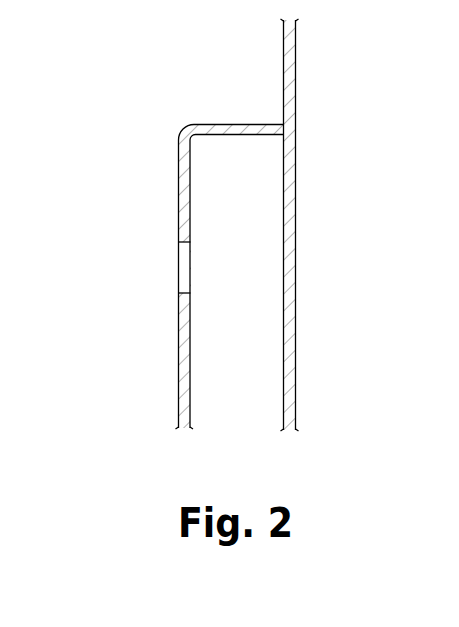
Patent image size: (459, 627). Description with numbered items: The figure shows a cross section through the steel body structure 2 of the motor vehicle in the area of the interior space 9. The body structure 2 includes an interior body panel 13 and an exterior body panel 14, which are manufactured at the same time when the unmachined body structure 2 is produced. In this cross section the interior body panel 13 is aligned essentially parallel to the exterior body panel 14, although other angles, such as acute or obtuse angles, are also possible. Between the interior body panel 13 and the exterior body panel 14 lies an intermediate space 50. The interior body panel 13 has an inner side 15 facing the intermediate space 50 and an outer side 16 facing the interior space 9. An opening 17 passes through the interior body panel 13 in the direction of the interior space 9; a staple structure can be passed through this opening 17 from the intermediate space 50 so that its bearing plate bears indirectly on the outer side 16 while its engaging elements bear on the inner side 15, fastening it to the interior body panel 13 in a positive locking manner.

The body structure 2 is at (244, 225).
The interior space 9 is at (58, 243).
The interior body panel 13 is at (180, 188).
The exterior body panel 14 is at (290, 60).
The inner side 15 is at (177, 408).
The outer side 16 is at (191, 408).
The opening 17 is at (185, 269).
The intermediate space 50 is at (228, 158).